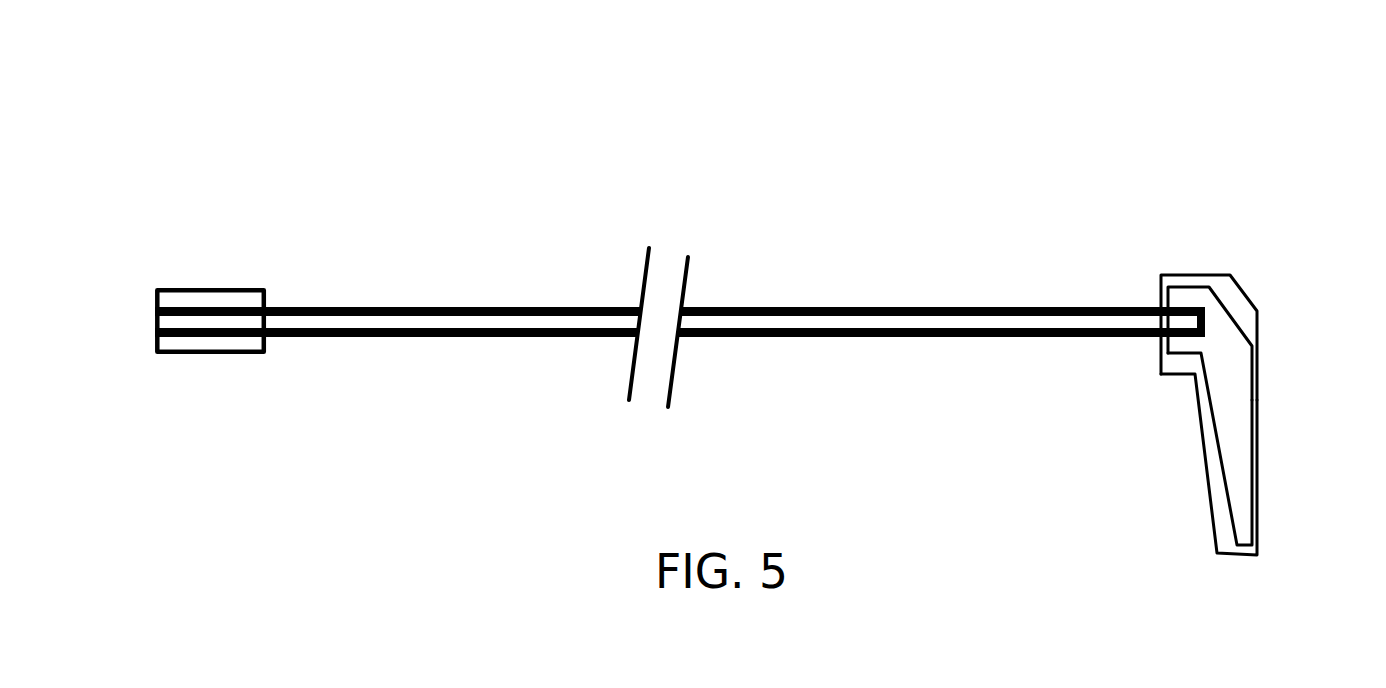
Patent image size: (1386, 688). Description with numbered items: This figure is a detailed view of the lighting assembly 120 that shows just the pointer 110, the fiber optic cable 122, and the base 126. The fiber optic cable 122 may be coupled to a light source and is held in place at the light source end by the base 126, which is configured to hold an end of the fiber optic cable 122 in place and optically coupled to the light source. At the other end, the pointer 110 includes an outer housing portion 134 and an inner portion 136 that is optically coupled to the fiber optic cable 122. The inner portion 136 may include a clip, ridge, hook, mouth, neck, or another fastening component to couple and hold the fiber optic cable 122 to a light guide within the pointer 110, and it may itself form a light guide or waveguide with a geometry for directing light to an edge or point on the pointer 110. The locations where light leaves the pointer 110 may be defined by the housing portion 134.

The lighting assembly 120 is at (561, 101).
The fiber optic cable 122 is at (829, 320).
The base 126 is at (208, 341).
The pointer 110 is at (1283, 359).
The outer housing portion 134 is at (1235, 305).
The inner portion 136 is at (1220, 402).